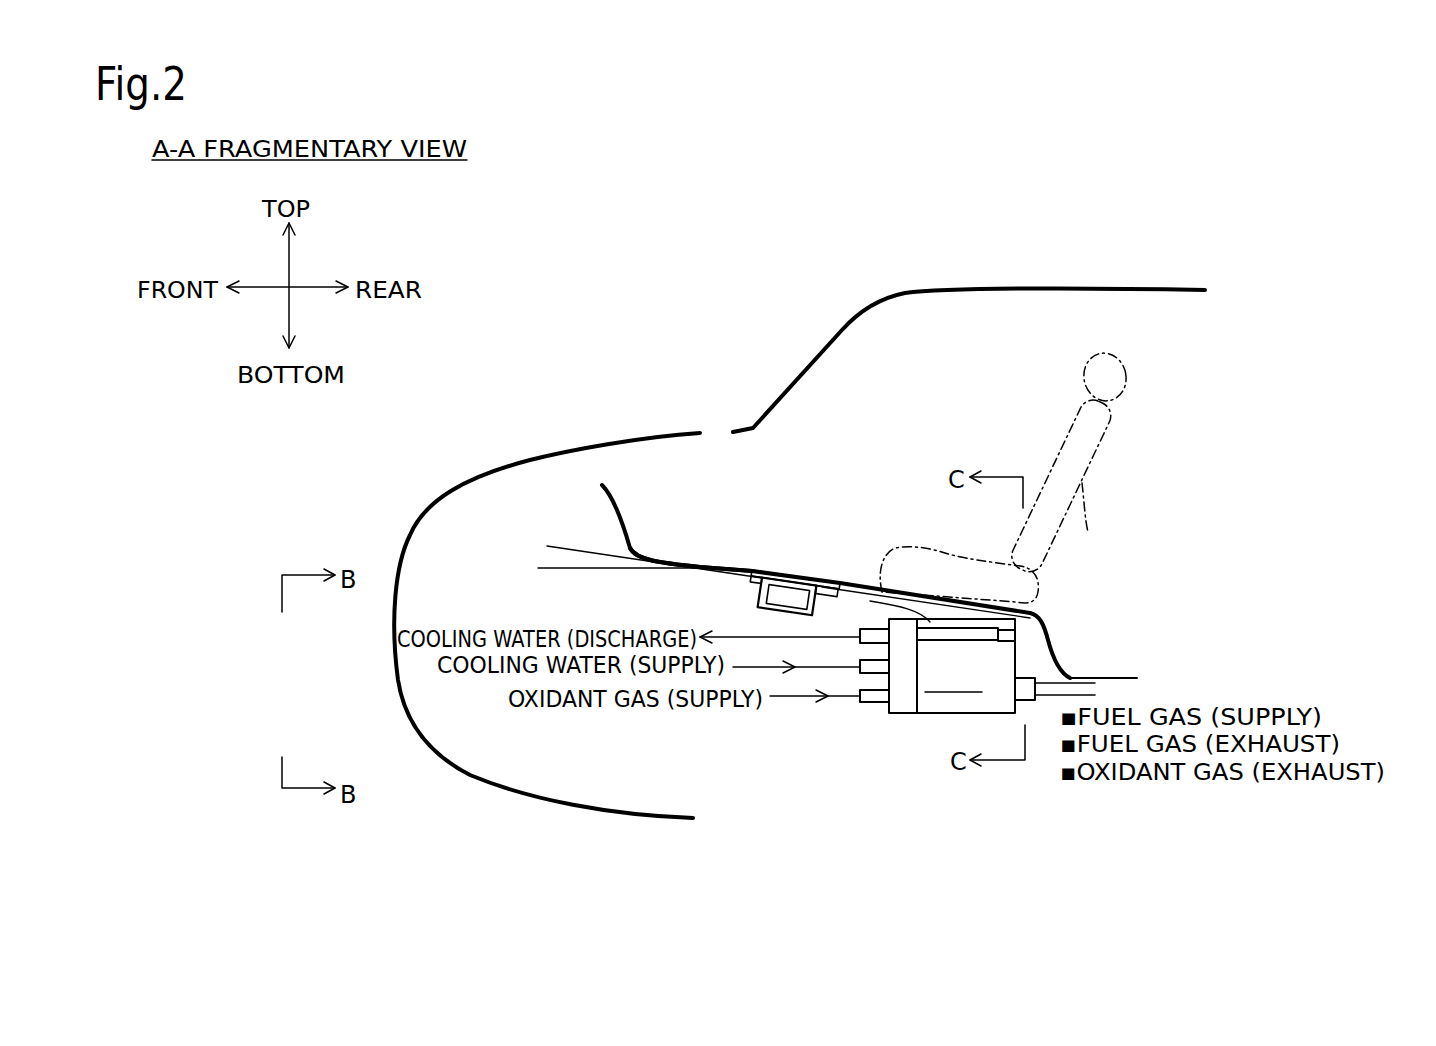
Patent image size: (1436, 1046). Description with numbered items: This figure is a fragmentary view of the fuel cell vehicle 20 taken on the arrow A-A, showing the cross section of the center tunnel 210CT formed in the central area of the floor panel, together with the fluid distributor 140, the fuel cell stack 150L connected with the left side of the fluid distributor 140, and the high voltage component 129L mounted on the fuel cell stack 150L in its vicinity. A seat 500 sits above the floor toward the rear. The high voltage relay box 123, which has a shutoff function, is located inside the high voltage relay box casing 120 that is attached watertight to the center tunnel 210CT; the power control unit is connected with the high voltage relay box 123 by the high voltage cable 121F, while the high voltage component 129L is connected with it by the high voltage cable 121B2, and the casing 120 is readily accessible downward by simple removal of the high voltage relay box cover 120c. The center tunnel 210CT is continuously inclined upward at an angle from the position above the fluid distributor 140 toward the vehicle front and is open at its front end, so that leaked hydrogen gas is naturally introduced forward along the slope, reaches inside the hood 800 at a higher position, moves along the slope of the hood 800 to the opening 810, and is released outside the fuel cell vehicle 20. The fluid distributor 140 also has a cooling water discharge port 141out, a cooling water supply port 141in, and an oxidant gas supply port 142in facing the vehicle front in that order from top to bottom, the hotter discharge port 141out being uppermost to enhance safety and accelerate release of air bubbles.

The fuel cell vehicle 20 is at (790, 252).
The hood 800 is at (530, 460).
The opening 810 is at (723, 427).
The high voltage relay box casing 120 is at (830, 516).
The high voltage relay box cover 120c is at (760, 570).
The high voltage cable 121F is at (729, 568).
The high voltage cable 121B2 is at (854, 598).
The high voltage relay box 123 is at (813, 574).
The center tunnel 210CT is at (1042, 625).
The seat 500 is at (1088, 530).
The high voltage component 129L is at (1015, 633).
The fuel cell stack 150L is at (926, 717).
The fluid distributor 140 is at (902, 713).
The cooling water discharge port 141out is at (860, 643).
The cooling water supply port 141in is at (860, 668).
The oxidant gas supply port 142in is at (860, 697).